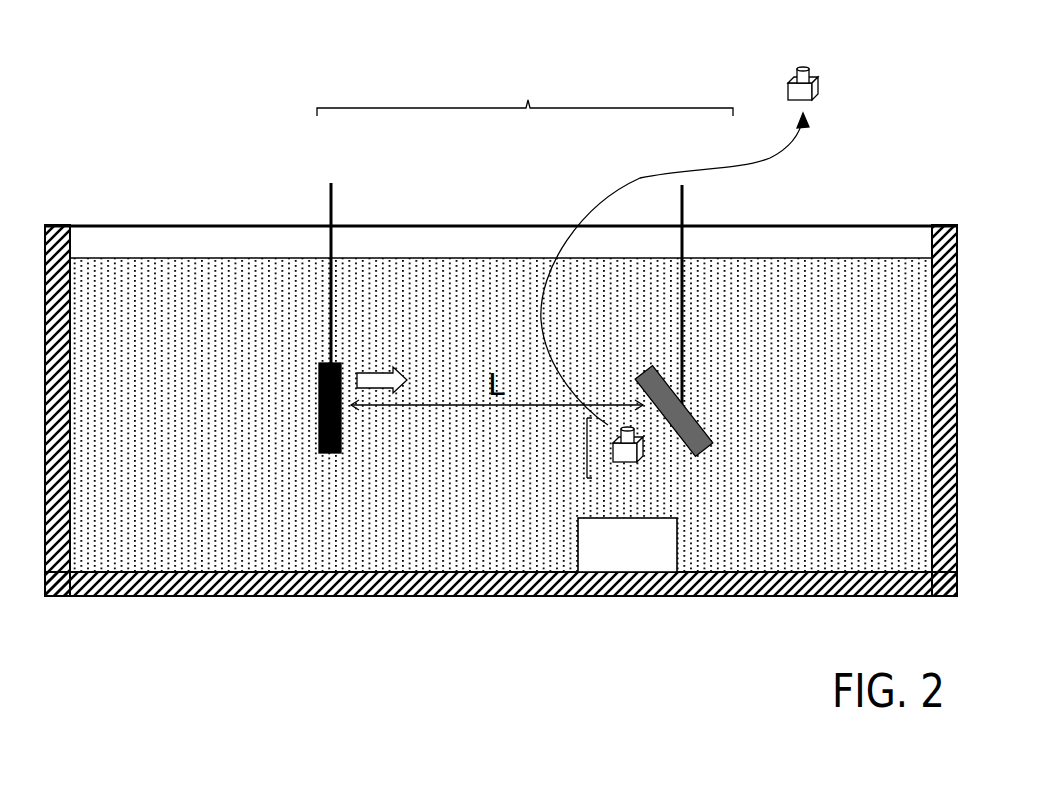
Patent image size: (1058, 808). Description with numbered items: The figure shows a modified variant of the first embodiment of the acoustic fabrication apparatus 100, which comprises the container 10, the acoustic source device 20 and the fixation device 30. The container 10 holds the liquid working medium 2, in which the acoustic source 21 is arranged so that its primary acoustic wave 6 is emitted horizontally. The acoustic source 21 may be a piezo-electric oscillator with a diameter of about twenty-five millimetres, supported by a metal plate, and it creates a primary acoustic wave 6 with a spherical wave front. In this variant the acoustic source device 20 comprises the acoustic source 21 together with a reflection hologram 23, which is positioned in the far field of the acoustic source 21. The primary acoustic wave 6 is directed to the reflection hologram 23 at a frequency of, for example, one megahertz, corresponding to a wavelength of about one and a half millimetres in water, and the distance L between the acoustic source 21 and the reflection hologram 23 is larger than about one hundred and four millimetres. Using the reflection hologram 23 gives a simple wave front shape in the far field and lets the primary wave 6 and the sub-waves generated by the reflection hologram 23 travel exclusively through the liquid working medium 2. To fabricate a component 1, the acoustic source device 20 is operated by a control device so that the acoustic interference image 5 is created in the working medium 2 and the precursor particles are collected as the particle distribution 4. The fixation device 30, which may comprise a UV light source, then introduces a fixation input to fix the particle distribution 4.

The component 1 is at (788, 90).
The acoustic fabrication apparatus 100 is at (840, 176).
The acoustic source device 20 is at (545, 91).
The working medium 2 is at (252, 270).
The acoustic source 21 is at (320, 445).
The primary acoustic wave 6 is at (379, 374).
The reflection hologram 23 is at (710, 447).
The particle distribution 4 is at (637, 458).
The acoustic interference image 5 is at (587, 448).
The fixation device 30 is at (662, 565).
The container 10 is at (910, 568).